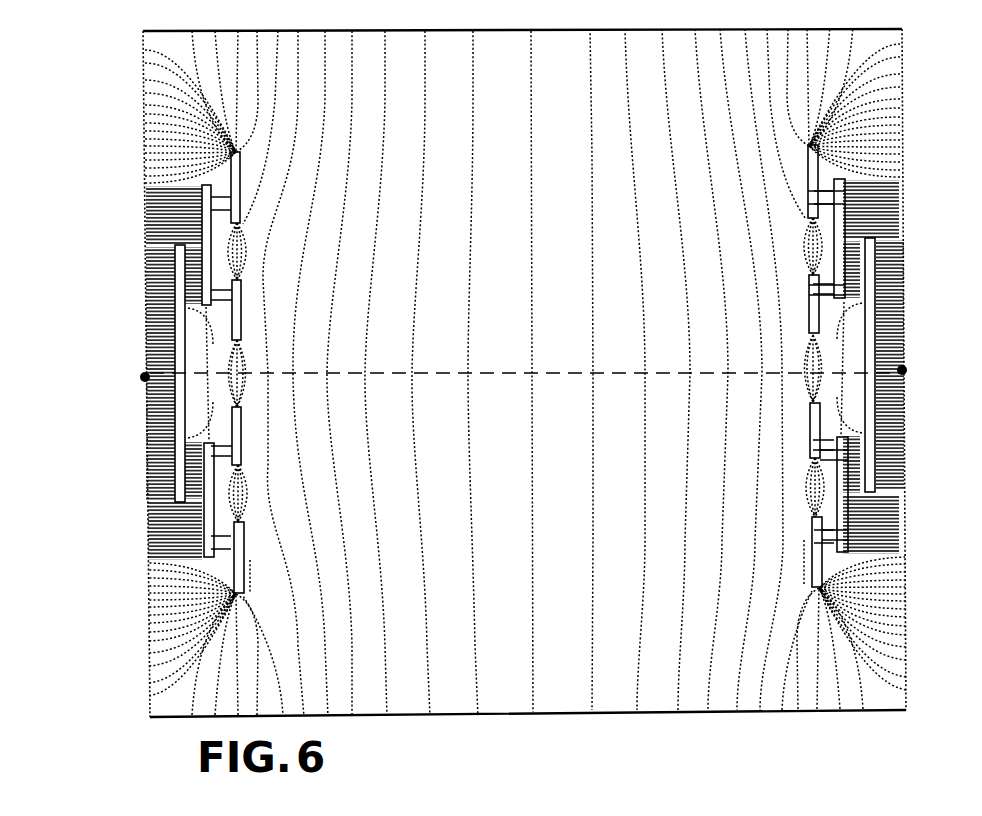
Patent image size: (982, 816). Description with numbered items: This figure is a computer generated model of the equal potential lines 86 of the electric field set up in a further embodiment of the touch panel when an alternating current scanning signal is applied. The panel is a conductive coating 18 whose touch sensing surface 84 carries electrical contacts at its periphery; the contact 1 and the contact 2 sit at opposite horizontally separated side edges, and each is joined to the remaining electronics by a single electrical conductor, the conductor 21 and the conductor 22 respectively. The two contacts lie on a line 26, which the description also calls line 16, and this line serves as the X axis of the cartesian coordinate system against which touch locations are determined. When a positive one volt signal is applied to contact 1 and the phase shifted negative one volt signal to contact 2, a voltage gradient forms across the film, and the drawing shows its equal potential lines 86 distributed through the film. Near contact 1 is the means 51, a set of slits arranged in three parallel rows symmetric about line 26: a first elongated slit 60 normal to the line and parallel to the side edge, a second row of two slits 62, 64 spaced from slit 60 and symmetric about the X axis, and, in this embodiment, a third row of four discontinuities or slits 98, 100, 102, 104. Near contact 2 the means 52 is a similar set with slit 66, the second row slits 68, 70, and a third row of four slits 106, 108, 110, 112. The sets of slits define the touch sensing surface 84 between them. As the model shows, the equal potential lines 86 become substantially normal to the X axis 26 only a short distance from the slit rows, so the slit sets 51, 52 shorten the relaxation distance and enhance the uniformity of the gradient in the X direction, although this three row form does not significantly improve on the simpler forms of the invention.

The electrical contact 1 is at (140, 366).
The electrical contact 2 is at (910, 362).
The line 16 is at (140, 645).
The coating 18 is at (172, 703).
The electrical conductor 21 is at (145, 377).
The electrical conductor 22 is at (906, 372).
The line 26 is at (511, 376).
The means 51 is at (312, 264).
The means 52 is at (744, 236).
The first elongated slit 60 is at (173, 263).
The slit 62 is at (214, 478).
The slit 64 is at (213, 263).
The slit 66 is at (878, 252).
The slit 68 is at (837, 495).
The slit 70 is at (835, 252).
The touch sensing surface 84 is at (625, 205).
The equal potential lines 86 is at (470, 258).
The slit 98 is at (245, 568).
The slit 100 is at (241, 413).
The slit 102 is at (241, 318).
The slit 104 is at (265, 185).
The slit 106 is at (811, 553).
The slit 108 is at (810, 443).
The slit 110 is at (808, 310).
The slit 112 is at (808, 186).